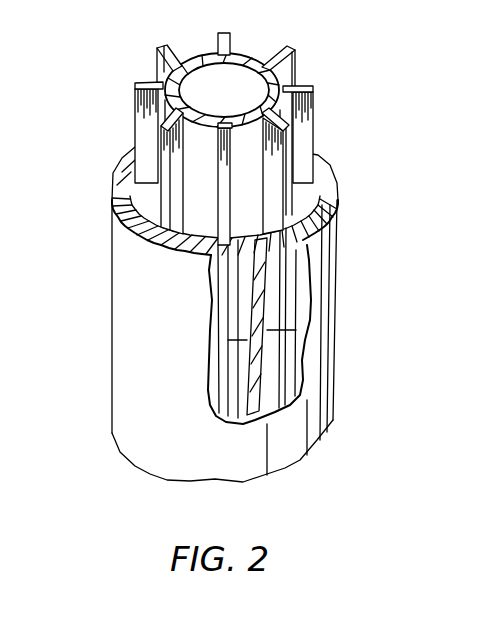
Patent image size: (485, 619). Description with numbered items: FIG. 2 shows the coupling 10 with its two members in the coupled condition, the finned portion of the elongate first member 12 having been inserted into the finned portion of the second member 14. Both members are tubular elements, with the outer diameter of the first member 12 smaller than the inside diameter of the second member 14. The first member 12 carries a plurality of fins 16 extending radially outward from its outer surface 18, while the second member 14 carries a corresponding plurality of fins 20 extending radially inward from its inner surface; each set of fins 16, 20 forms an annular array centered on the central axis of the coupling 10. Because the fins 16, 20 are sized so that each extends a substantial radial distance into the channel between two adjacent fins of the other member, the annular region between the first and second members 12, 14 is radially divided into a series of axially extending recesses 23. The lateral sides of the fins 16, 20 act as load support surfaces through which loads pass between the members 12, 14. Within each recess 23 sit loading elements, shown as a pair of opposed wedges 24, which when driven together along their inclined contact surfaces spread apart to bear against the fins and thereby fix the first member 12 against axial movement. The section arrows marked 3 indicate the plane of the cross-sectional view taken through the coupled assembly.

The coupling 10 is at (76, 71).
The first member 12 is at (247, 58).
The second member 14 is at (172, 336).
The fins 16 is at (314, 85).
The outer surface 18 is at (198, 143).
The fins 20 is at (128, 187).
The axially extending recesses 23 is at (273, 367).
The wedges 24 is at (333, 203).
The section line 3- 3 is at (219, 281).